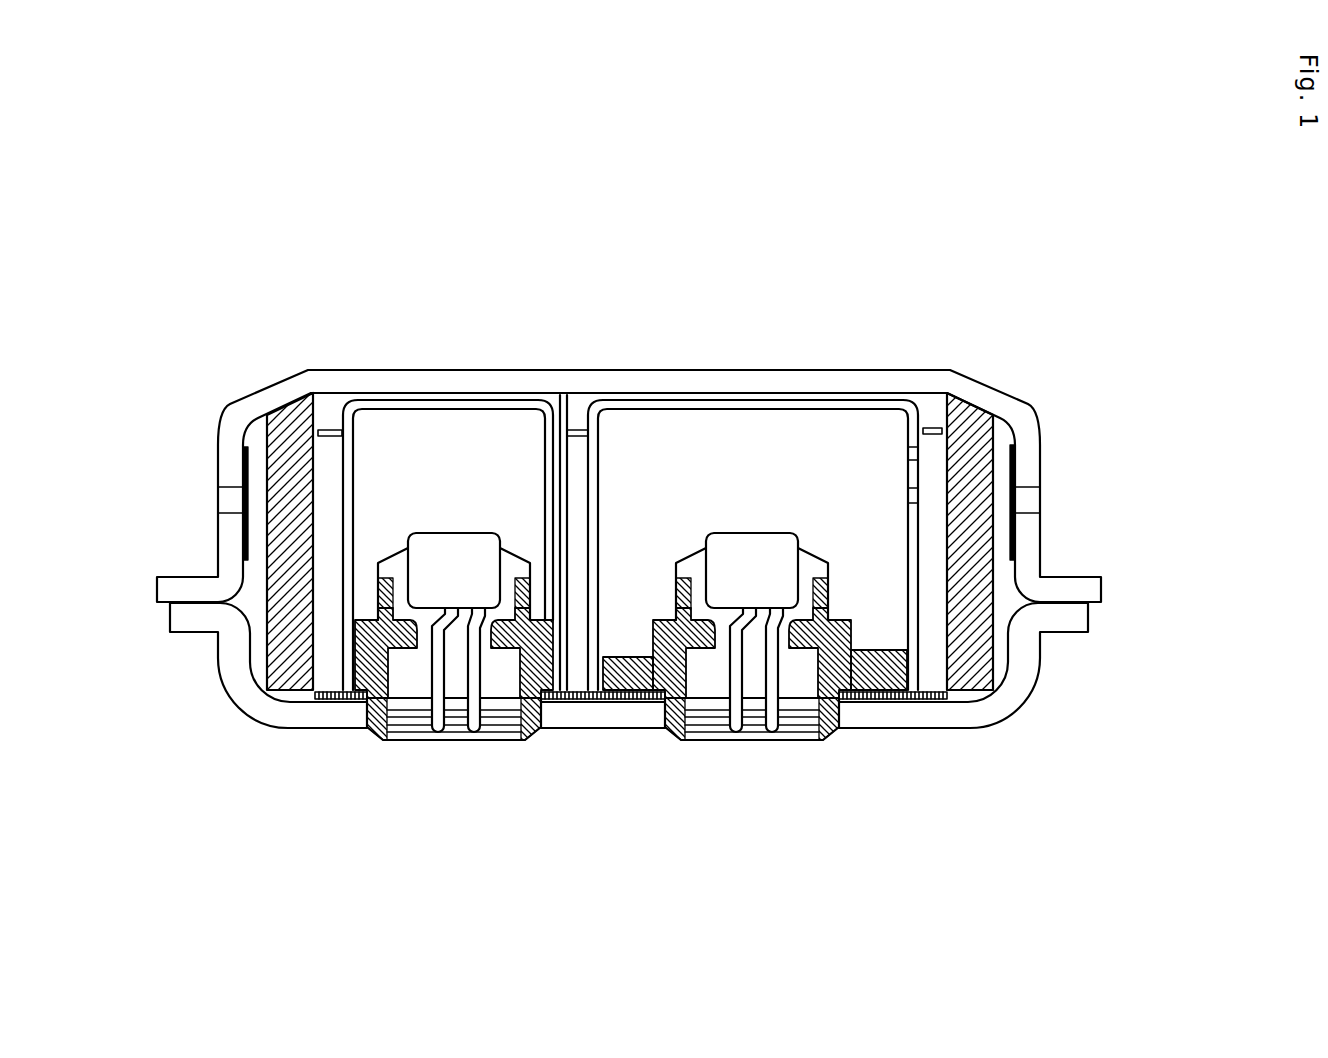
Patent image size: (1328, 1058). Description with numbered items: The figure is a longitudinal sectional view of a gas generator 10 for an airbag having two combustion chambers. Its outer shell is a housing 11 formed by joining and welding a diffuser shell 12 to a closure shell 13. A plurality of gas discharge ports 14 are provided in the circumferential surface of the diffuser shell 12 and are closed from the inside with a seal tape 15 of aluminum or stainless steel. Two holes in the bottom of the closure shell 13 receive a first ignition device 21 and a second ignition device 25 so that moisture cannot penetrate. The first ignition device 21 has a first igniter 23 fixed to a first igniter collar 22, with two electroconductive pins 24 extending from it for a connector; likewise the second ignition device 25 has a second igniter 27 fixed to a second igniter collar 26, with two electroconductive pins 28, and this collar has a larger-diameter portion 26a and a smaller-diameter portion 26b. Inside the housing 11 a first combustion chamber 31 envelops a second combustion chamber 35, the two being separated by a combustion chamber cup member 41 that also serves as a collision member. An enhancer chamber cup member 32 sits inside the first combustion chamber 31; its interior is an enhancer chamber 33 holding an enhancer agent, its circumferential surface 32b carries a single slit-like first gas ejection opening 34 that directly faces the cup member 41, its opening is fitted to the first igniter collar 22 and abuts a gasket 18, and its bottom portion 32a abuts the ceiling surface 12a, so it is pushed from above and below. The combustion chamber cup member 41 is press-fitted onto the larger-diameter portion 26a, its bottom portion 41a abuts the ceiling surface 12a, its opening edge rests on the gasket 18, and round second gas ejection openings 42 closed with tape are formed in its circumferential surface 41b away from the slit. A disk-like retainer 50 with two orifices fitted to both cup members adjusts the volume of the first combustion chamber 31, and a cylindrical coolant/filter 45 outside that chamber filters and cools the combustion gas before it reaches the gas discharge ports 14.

The gas generator 10 is at (668, 338).
The housing 11 is at (1183, 545).
The diffuser shell 12 is at (1030, 545).
The ceiling surface 12a is at (326, 466).
The closure shell 13 is at (1032, 662).
The gas discharge ports 14 is at (220, 500).
The seal tape 15 is at (252, 452).
The gasket 18 is at (303, 693).
The first ignition device 21 is at (435, 748).
The first igniter collar 22 is at (358, 650).
The first igniter 23 is at (474, 588).
The electroconductive pins 24 is at (470, 735).
The second ignition device 25 is at (735, 748).
The second igniter collar 26 is at (647, 668).
The larger-diameter portion 26a is at (888, 680).
The smaller-diameter portion 26b is at (840, 630).
The second igniter 27 is at (772, 588).
The electroconductive pins 28 is at (770, 735).
The first combustion chamber 31 is at (322, 462).
The enhancer chamber cup member 32 is at (340, 515).
The bottom portion 32a is at (392, 418).
The circumferential surface 32b is at (353, 485).
The enhancer chamber 33 is at (472, 452).
The first gas ejection opening 34 is at (570, 466).
The second combustion chamber 35 is at (726, 456).
The combustion chamber cup member 41 is at (920, 592).
The bottom portion 41a is at (830, 418).
The circumferential surface 41b is at (913, 637).
The second gas ejection openings 42 is at (912, 492).
The coolant/filter 45 is at (283, 622).
The retainer 50 is at (585, 428).